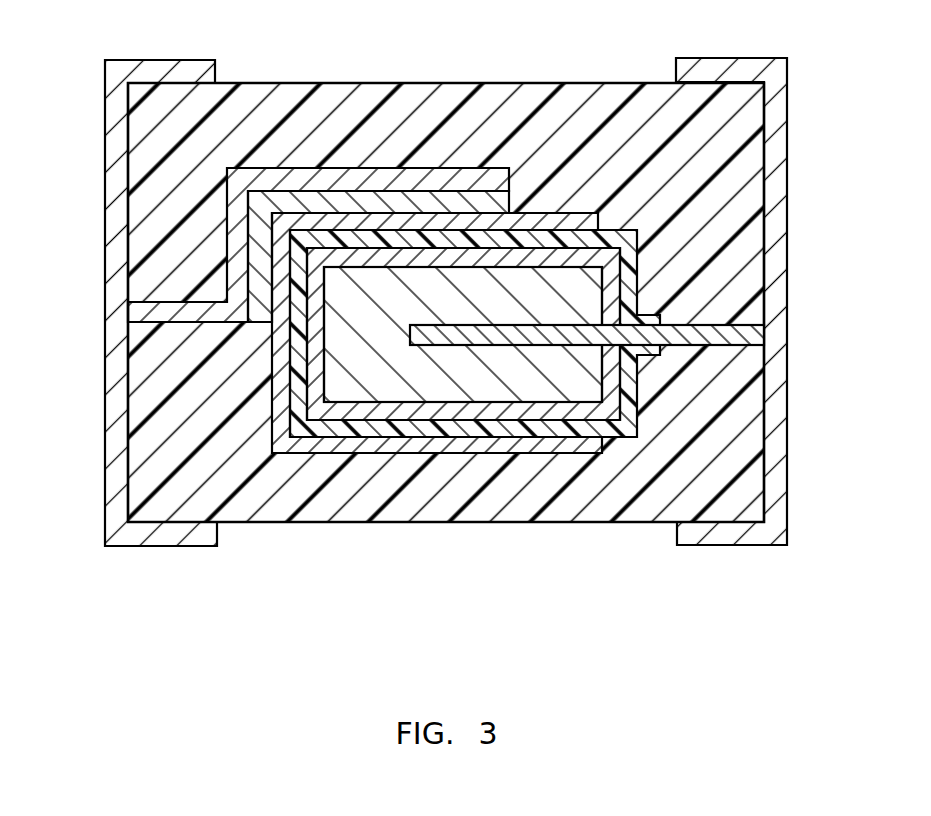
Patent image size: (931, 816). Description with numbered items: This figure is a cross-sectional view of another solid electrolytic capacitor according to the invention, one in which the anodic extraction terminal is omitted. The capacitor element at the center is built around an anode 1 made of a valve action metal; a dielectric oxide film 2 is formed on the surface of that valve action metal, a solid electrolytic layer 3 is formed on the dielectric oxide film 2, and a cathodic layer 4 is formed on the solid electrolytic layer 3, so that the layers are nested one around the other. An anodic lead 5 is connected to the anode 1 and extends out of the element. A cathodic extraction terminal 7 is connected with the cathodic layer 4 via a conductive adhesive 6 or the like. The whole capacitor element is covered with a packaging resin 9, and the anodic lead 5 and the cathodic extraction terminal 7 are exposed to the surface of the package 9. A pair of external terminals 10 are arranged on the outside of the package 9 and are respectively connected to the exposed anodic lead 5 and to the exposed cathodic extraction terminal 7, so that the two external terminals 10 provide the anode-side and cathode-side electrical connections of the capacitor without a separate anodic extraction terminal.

The anode 1 is at (465, 370).
The dielectric oxide film 2 is at (610, 395).
The solid electrolytic layer 3 is at (627, 425).
The cathodic layer 4 is at (400, 445).
The anodic lead 5 is at (785, 319).
The conductive adhesive 6 is at (440, 200).
The cathodic extraction terminal 7 is at (385, 178).
The packaging resin 9 is at (288, 503).
The external terminals 10 is at (111, 463).